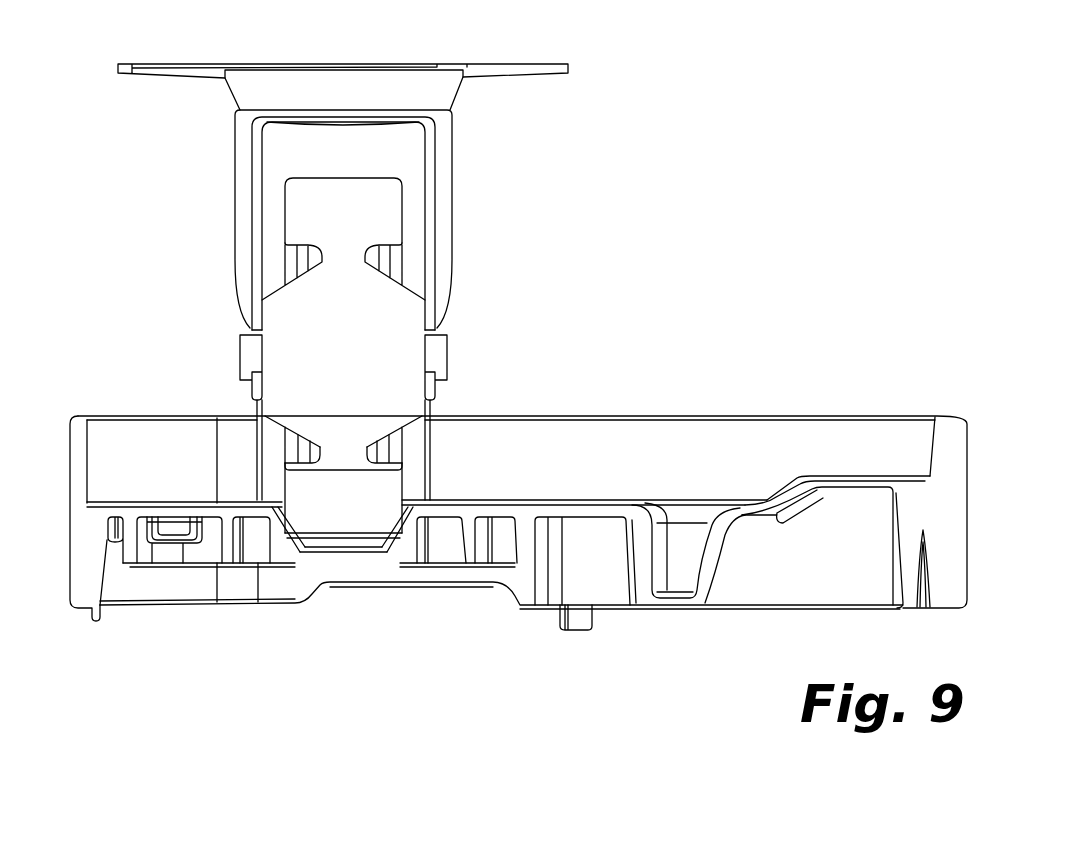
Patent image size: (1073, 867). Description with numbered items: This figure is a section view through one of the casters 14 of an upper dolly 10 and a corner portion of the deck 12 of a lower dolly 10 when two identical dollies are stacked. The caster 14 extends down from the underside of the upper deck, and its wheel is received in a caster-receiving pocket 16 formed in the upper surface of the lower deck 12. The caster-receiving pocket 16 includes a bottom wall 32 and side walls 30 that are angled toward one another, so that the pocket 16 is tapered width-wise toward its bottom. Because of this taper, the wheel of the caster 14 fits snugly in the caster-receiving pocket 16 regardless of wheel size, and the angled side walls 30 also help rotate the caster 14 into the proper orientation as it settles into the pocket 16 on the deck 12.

The dolly 10 is at (571, 353).
The deck 12 is at (571, 529).
The caster 14 is at (403, 486).
The caster-receiving pocket 16 is at (402, 498).
The side wall 30 is at (272, 535).
The bottom wall 32 is at (343, 557).